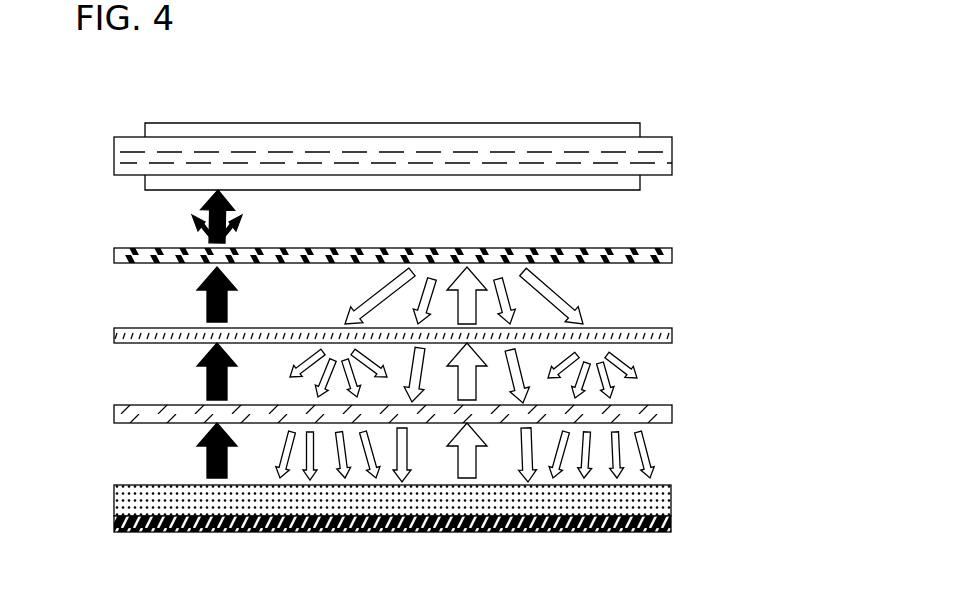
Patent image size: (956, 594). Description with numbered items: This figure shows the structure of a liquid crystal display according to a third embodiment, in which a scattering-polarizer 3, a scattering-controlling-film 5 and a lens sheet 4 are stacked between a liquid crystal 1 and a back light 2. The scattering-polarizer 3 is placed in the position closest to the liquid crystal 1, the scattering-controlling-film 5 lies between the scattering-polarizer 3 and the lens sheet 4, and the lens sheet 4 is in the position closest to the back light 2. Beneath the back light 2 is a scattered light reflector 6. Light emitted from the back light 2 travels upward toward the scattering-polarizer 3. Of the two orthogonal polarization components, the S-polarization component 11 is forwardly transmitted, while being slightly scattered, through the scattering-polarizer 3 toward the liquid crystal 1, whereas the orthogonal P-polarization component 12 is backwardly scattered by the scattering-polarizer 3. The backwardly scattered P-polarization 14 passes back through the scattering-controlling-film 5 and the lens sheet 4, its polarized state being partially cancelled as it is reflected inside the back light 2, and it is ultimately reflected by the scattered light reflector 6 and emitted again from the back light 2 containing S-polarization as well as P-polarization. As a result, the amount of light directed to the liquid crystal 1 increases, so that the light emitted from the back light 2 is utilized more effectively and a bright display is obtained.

The liquid crystal 1 is at (674, 153).
The back light 2 is at (673, 500).
The scattering-polarizer 3 is at (674, 256).
The lens sheet 4 is at (674, 415).
The scattering-controlling-film 5 is at (674, 336).
The scattered light reflector 6 is at (673, 525).
The polarization component 11 is at (217, 478).
The polarization component 12 is at (467, 478).
The polarization component 14 is at (560, 293).